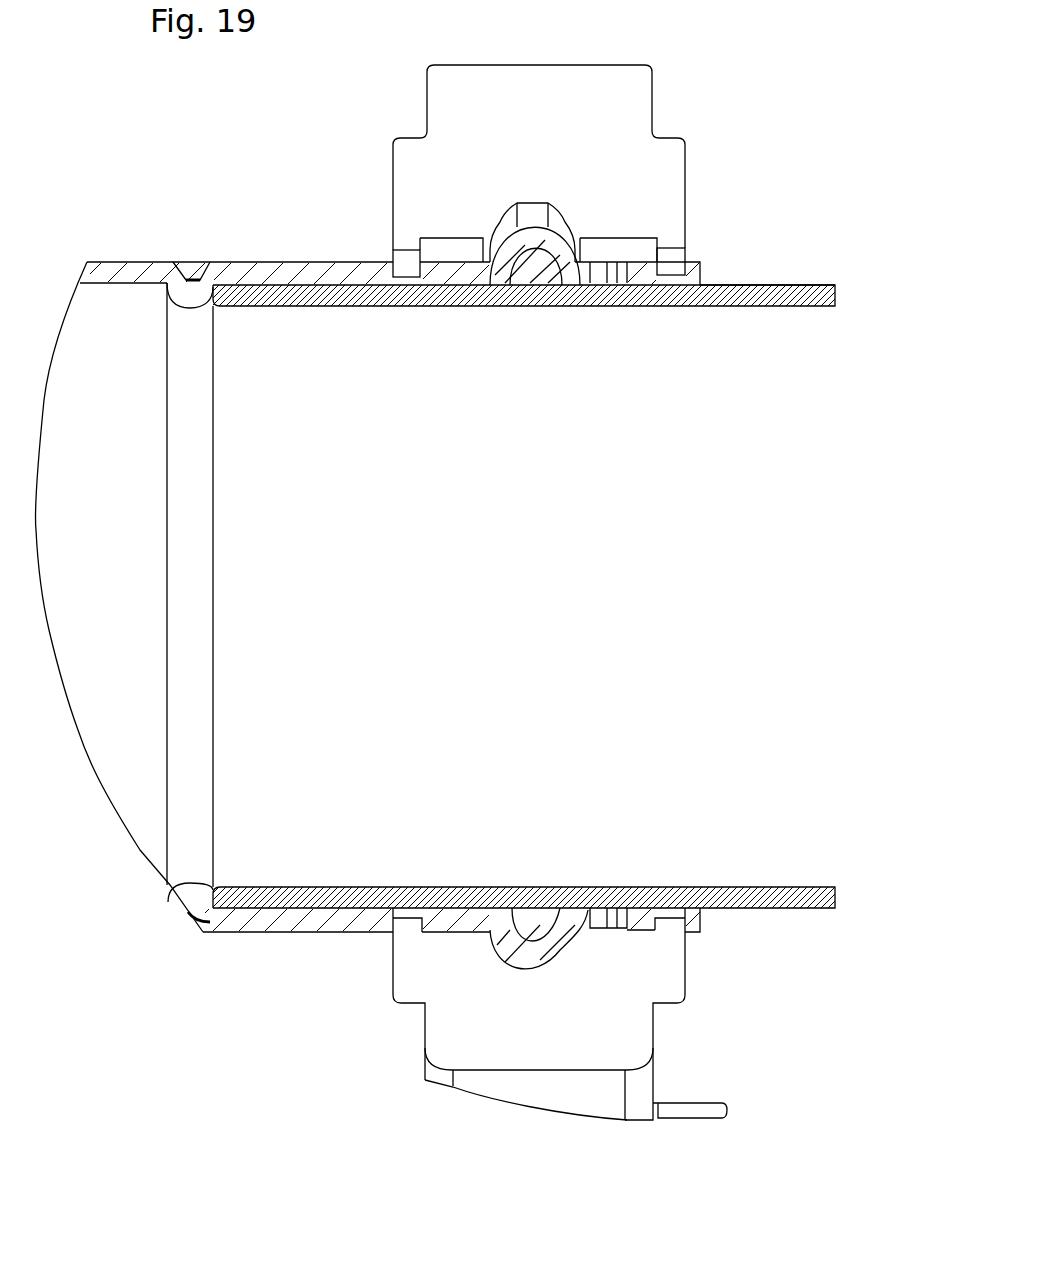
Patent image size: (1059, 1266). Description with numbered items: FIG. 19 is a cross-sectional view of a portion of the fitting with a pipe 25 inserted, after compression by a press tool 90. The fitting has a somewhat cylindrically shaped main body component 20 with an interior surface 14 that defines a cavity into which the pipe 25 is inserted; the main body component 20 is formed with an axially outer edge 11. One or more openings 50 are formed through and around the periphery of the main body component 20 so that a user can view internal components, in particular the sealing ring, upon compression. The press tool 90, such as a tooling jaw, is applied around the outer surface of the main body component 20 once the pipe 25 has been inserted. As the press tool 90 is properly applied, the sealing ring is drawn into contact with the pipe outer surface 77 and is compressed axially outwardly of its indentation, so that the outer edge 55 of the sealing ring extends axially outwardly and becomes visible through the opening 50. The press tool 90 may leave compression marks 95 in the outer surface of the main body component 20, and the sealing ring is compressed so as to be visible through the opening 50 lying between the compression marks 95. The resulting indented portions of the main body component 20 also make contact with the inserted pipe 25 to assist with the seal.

The press tool 90 is at (675, 144).
The axially outer edge 11 is at (702, 268).
The outer surface of pipe 77 is at (737, 285).
The pipe 25 is at (836, 288).
The interior surface 14 is at (102, 285).
The main body component 20 is at (323, 918).
The compression marks 95 is at (405, 907).
The outer edge of sealing ring 55 is at (615, 903).
The opening 50 is at (617, 937).